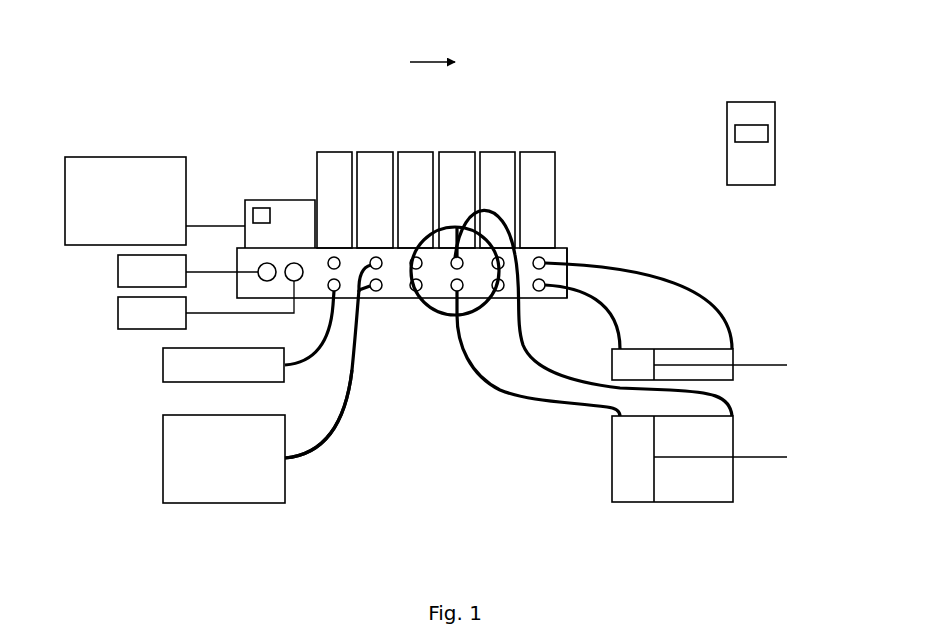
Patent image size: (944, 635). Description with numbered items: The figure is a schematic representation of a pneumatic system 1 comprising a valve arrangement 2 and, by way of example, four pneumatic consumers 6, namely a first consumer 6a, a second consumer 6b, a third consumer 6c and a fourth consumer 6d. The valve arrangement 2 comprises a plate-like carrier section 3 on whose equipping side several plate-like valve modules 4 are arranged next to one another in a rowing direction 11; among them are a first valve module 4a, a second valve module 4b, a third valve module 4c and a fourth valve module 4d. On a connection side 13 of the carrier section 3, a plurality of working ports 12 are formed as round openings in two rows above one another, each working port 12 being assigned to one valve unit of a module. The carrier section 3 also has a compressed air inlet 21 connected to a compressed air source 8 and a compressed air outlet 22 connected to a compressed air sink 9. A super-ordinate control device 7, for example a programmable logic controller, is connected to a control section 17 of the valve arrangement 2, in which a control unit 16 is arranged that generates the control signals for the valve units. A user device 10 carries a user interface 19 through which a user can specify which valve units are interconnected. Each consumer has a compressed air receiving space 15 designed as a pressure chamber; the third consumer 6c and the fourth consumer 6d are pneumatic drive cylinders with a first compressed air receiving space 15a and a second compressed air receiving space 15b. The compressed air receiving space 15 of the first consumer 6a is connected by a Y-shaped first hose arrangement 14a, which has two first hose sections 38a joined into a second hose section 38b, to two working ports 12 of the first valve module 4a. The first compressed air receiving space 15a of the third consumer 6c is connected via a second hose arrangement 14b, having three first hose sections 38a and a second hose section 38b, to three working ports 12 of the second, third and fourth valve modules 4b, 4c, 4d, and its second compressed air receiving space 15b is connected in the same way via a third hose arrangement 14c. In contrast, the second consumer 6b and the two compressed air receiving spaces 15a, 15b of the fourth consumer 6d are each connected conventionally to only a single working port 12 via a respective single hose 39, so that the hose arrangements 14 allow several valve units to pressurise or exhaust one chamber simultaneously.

The pneumatic system 1 is at (156, 70).
The valve arrangement 2 is at (441, 222).
The carrier section 3 is at (570, 257).
The valve modules 4 is at (436, 163).
The first valve module 4a is at (388, 158).
The second valve module 4b is at (425, 158).
The third valve module 4c is at (467, 158).
The fourth valve module 4d is at (497, 163).
The pneumatic consumer 6 is at (453, 430).
The first consumer 6a is at (154, 493).
The second consumer 6b is at (168, 424).
The third consumer 6c is at (632, 495).
The fourth consumer 6d is at (734, 356).
The control device 7 is at (118, 212).
The compressed air source 8 is at (141, 283).
The compressed air sink 9 is at (141, 325).
The user device 10 is at (760, 108).
The rowing direction 11 is at (432, 49).
The working ports 12 is at (337, 258).
The connection side 13 is at (568, 250).
The hose arrangement 14 is at (452, 379).
The first hose arrangement 14a is at (336, 447).
The second hose arrangement 14b is at (467, 388).
The third hose arrangement 14c is at (542, 332).
The compressed air receiving space 15 is at (210, 376).
The first compressed air receiving space 15a is at (628, 353).
The second compressed air receiving space 15b is at (720, 377).
The control unit 16 is at (262, 215).
The control section 17 is at (291, 210).
The user interface 19 is at (767, 133).
The compressed air inlet 21 is at (258, 268).
The compressed air outlet 22 is at (297, 281).
The first hose sections 38a is at (365, 250).
The second hose section 38b is at (350, 401).
The single hose 39 is at (305, 365).